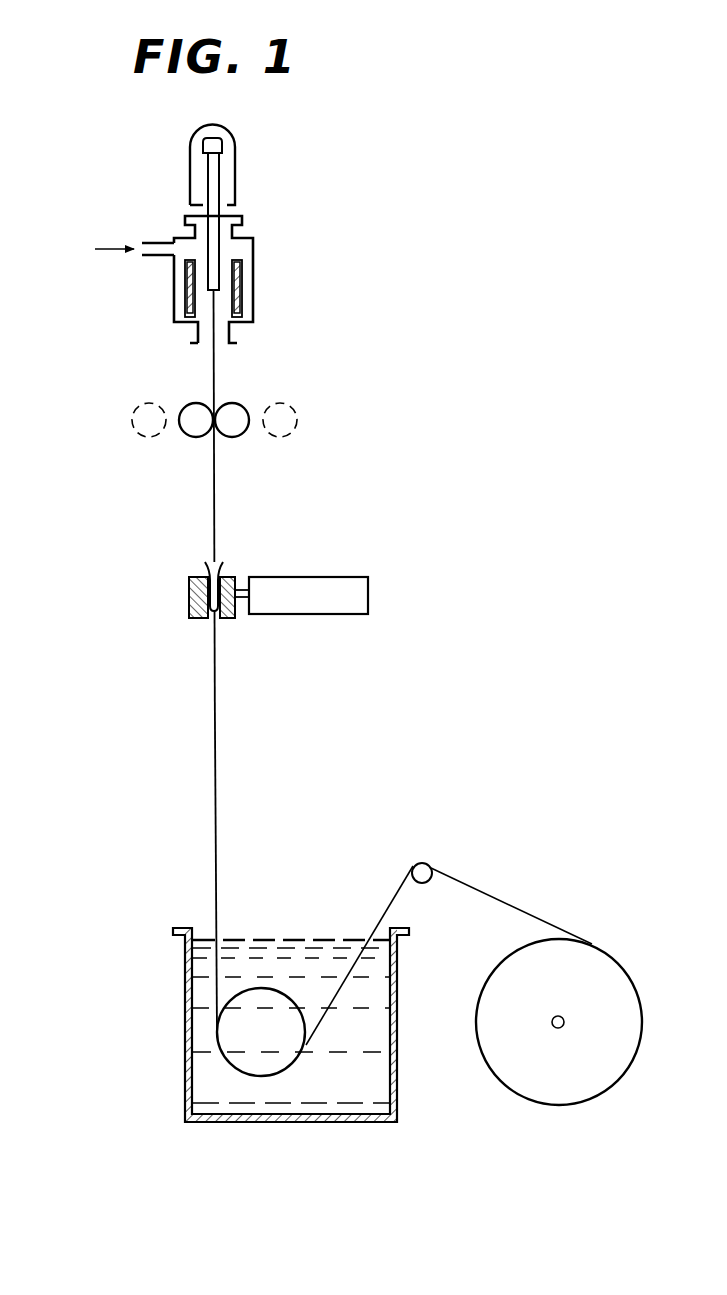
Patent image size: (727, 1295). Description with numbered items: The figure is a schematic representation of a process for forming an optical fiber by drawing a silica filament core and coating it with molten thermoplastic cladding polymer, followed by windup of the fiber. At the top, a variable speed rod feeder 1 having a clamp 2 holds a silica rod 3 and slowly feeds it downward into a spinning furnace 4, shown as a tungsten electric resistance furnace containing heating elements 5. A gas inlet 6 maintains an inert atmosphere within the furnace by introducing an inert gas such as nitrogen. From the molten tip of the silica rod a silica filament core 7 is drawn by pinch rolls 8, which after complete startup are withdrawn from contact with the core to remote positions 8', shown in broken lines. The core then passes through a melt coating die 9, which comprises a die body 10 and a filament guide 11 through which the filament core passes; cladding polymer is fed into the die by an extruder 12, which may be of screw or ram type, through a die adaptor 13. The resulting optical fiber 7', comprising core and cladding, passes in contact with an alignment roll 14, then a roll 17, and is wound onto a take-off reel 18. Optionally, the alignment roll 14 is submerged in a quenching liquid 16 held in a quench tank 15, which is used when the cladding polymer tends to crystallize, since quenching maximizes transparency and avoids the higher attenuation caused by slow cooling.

The variable speed rod feeder 1 is at (190, 172).
The clamp 2 is at (215, 150).
The silica rod 3 is at (218, 200).
The spinning furnace 4 is at (253, 258).
The heating elements 5 is at (240, 300).
The gas inlet 6 is at (150, 255).
The silica filament core 7 is at (249, 495).
The pinch rolls 8 is at (214, 442).
The remote positions 8' is at (212, 426).
The melt coating die 9 is at (178, 588).
The die body 10 is at (194, 603).
The filament guide 11 is at (209, 576).
The extruder 12 is at (318, 607).
The die adaptor 13 is at (241, 602).
The optical fiber 7' is at (250, 866).
The alignment roll 14 is at (272, 1038).
The quench tank 15 is at (185, 974).
The quenching liquid 16 is at (339, 1086).
The roll 17 is at (424, 870).
The take-off reel 18 is at (567, 1009).